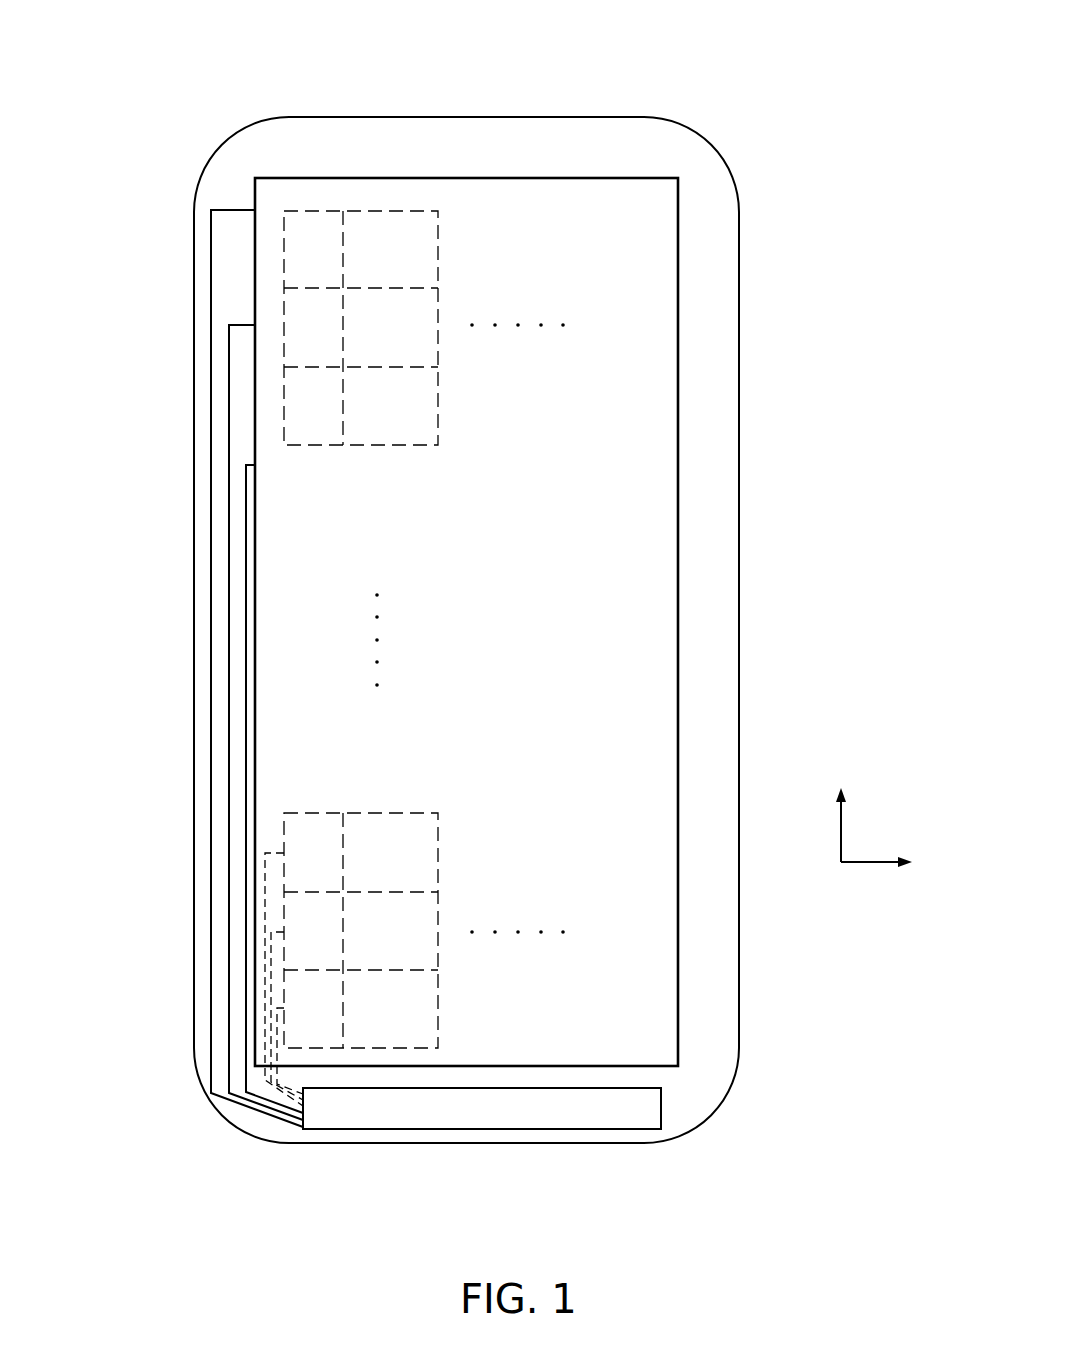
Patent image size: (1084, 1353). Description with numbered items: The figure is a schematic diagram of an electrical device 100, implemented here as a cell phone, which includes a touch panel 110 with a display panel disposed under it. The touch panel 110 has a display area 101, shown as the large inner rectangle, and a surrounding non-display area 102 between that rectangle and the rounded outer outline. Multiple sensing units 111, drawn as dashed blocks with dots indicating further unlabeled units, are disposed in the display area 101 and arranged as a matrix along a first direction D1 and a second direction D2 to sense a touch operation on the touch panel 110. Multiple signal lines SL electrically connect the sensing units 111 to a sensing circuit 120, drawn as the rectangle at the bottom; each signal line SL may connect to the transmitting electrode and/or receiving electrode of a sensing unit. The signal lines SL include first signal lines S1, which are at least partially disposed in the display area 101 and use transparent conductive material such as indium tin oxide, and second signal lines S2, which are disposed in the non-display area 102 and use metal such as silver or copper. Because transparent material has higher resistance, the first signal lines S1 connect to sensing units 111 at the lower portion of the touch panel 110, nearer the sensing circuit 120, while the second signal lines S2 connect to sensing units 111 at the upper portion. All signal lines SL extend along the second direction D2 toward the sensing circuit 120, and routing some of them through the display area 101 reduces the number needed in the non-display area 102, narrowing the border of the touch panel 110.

The electrical device 100 is at (172, 14).
The display area 101 is at (541, 228).
The non-display area 102 is at (710, 262).
The touch panel 110 is at (682, 117).
The sensing units 111 is at (323, 211).
The sensing circuit 120 is at (661, 1108).
The signal lines SL is at (172, 668).
The first signal lines S1 is at (265, 1009).
The second signal lines S2 is at (211, 912).
The first direction D1 is at (902, 869).
The second direction D2 is at (842, 810).